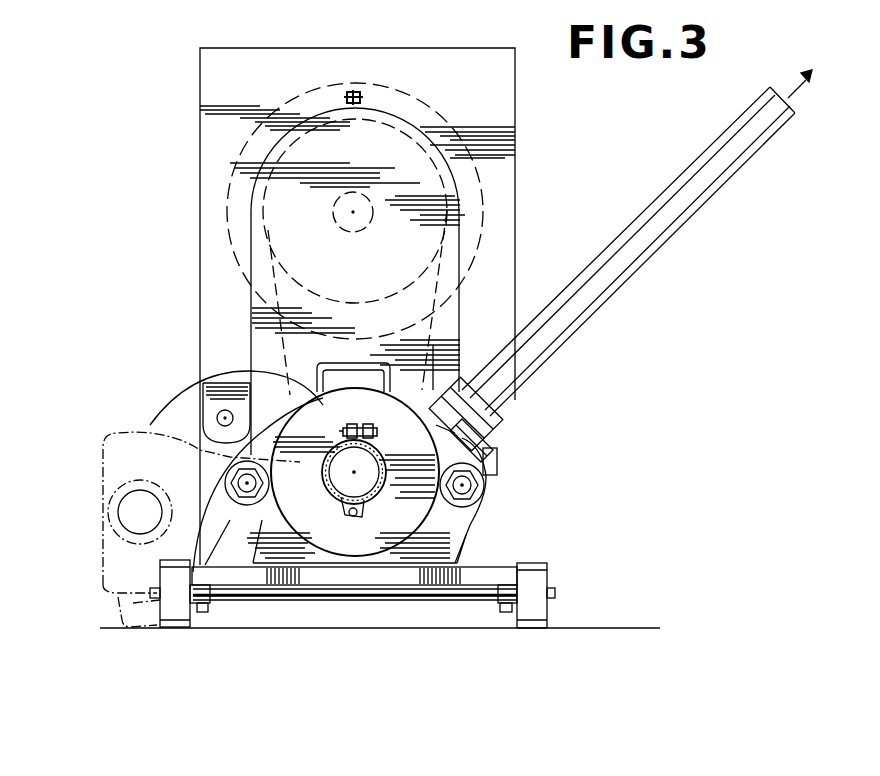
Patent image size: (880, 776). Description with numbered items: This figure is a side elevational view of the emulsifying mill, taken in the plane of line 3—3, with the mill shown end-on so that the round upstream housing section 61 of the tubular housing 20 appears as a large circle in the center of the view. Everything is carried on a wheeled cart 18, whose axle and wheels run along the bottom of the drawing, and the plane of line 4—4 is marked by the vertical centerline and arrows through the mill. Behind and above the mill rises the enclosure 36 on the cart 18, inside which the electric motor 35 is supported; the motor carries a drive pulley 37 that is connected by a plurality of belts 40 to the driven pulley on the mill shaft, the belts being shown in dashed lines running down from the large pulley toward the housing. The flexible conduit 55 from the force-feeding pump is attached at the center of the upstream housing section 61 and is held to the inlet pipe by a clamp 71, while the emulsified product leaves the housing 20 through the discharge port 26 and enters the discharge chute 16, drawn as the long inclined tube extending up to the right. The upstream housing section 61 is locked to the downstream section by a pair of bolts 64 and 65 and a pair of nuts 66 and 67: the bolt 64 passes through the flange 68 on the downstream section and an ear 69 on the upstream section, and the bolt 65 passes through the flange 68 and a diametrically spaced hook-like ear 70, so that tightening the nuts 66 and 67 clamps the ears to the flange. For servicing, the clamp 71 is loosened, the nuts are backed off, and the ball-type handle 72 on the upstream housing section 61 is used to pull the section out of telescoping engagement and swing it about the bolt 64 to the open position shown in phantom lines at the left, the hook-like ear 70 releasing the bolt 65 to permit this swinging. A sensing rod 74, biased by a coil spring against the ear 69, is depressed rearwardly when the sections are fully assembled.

The line 3— 3 is at (148, 28).
The line 4— 4 is at (330, 336).
The discharge chute 16 is at (702, 210).
The wheeled cart 18 is at (440, 585).
The tubular housing 20 is at (415, 384).
The discharge port 26 is at (500, 410).
The electric motor 35 is at (472, 163).
The enclosure 36 is at (505, 112).
The drive pulley 37 is at (415, 133).
The belts 40 is at (461, 322).
The flexible conduit 55 is at (373, 447).
The upstream housing section 61 is at (140, 498).
The bolt 64 is at (225, 481).
The bolt 65 is at (497, 459).
The nut 66 is at (262, 467).
The nut 67 is at (487, 490).
The flange 68 is at (466, 535).
The ear 69 is at (273, 432).
The hook-like ear 70 is at (491, 438).
The clamp 71 is at (337, 504).
The ball-type handle 72 is at (326, 366).
The sensing rod 74 is at (302, 550).